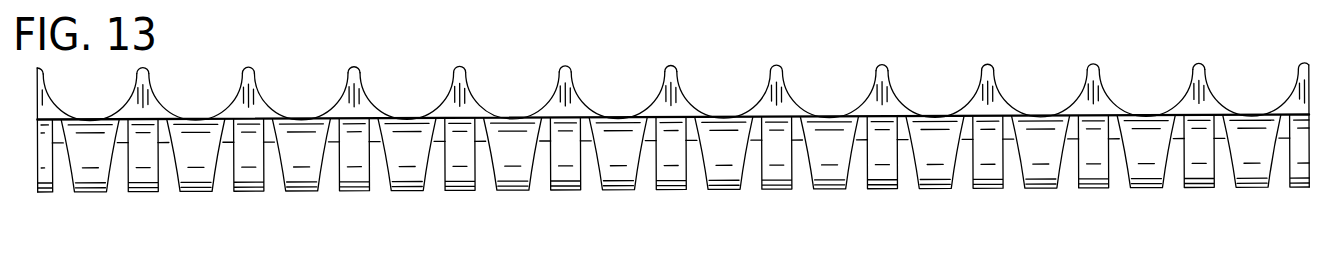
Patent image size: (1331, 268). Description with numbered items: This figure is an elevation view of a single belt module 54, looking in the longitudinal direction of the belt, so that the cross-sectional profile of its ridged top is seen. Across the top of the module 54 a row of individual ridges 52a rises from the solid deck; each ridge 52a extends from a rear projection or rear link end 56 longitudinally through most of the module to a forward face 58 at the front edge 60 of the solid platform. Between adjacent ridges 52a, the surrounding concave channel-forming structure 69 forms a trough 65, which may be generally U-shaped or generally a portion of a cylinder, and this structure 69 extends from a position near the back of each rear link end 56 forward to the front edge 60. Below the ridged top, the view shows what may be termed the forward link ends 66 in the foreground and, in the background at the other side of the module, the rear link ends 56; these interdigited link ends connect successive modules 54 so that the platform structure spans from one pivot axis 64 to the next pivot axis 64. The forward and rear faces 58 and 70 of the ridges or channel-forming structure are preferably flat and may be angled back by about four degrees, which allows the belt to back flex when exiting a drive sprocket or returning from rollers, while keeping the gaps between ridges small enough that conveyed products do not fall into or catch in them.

The module 54 is at (224, 66).
The individual ridge 52a is at (355, 68).
The forward face 58 is at (477, 100).
The concave channel-forming structure 69 is at (342, 100).
The trough 65 is at (828, 80).
The pivot axis 64 is at (1252, 58).
The rear face 70 is at (147, 137).
The front edge 60 is at (357, 137).
The forward link end 66 is at (192, 188).
The rear link end 56 is at (248, 188).